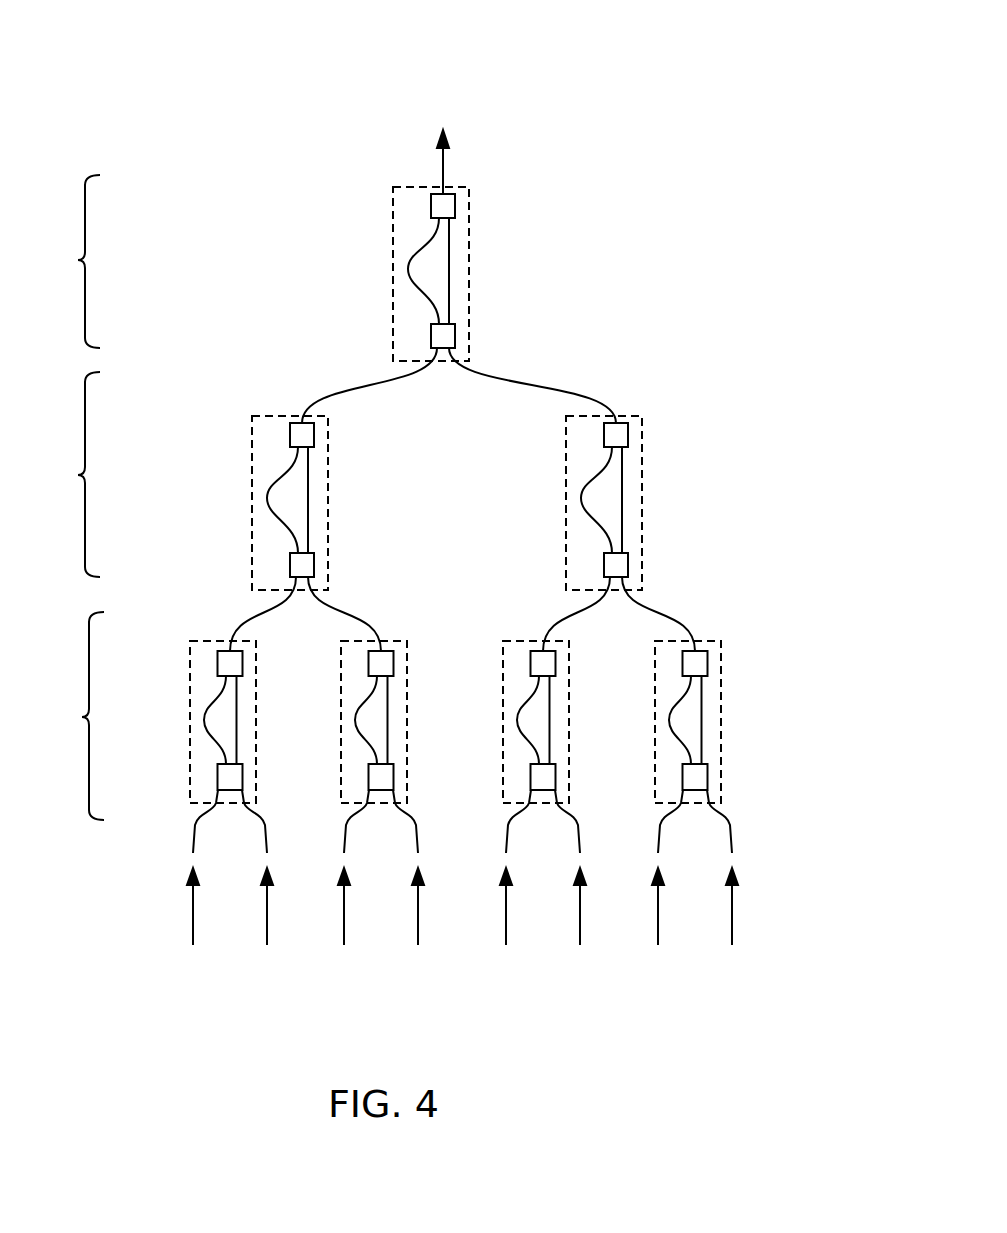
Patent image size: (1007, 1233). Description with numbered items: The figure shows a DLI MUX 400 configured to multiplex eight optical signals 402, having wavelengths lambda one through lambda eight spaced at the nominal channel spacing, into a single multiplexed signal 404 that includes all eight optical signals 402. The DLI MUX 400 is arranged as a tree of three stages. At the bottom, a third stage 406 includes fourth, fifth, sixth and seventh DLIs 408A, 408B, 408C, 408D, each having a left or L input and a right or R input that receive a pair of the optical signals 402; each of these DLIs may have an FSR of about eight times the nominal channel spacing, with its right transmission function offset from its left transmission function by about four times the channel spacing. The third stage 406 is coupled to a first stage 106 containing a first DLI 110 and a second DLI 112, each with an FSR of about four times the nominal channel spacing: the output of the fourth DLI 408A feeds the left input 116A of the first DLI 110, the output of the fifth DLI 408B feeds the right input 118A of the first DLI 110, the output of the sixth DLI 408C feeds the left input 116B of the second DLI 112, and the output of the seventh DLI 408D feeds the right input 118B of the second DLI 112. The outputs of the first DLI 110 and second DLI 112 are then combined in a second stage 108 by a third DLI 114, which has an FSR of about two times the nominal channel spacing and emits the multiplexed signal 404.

The DLI MUX 400 is at (312, 65).
The multiplexed signal 404 is at (443, 157).
The second stage 108 is at (78, 260).
The third DLI 114 is at (393, 272).
The first stage 106 is at (78, 475).
The first DLI 110 is at (252, 512).
The second DLI 112 is at (642, 503).
The left input of the first DLI 116A is at (278, 608).
The right input of the first DLI 118A is at (318, 607).
The left input of the second DLI 116B is at (592, 608).
The right input of the second DLI 118B is at (632, 605).
The third stage 406 is at (82, 717).
The fourth DLI 408A is at (190, 718).
The fifth DLI 408B is at (341, 715).
The sixth DLI 408C is at (503, 716).
The seventh DLI 408D is at (655, 713).
The optical signals 402 is at (778, 903).